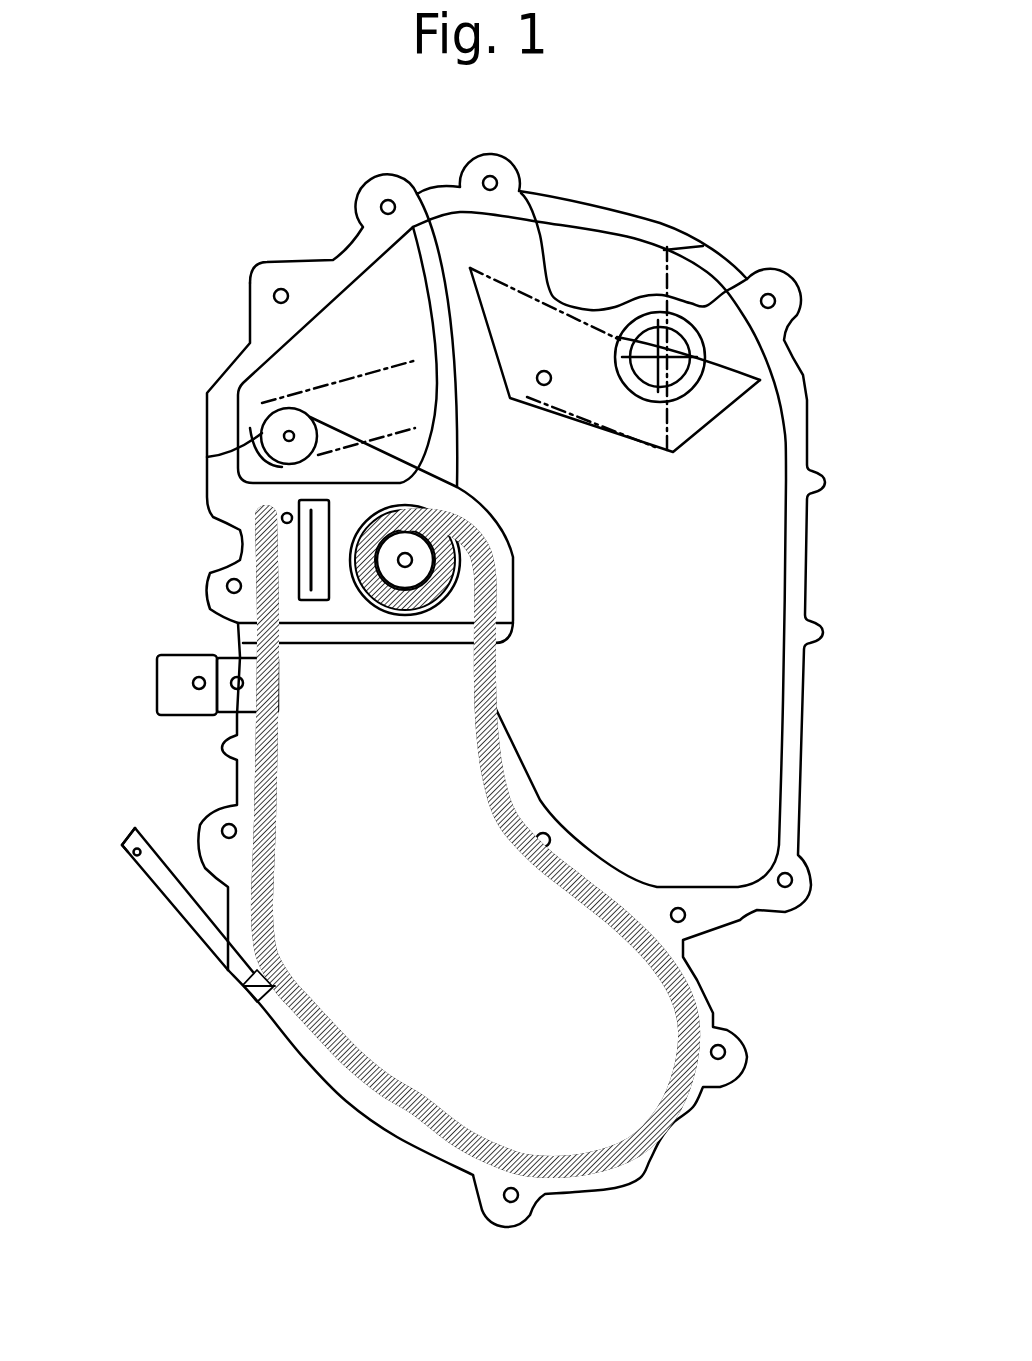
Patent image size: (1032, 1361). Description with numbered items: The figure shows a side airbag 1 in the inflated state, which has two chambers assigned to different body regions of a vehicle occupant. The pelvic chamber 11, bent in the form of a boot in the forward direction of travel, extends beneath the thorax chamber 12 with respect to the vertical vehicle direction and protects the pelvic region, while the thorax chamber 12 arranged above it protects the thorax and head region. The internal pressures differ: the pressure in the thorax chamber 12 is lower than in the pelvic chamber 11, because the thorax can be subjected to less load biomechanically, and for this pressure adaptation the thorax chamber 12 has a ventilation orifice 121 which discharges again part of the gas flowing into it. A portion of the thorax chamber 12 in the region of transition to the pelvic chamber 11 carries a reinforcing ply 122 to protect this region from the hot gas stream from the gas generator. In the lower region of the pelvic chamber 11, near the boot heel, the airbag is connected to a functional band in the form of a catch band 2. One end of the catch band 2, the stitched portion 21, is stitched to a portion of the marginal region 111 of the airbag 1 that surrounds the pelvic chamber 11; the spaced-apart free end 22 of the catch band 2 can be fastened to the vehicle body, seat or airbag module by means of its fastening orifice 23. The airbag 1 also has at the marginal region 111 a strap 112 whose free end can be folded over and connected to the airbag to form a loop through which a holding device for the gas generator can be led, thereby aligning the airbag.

The side airbag 1 is at (755, 244).
The pelvic chamber 11 is at (605, 1097).
The marginal region 111 is at (410, 1127).
The strap 112 is at (160, 661).
The thorax chamber 12 is at (747, 578).
The ventilation orifice 121 is at (760, 380).
The reinforcing ply 122 is at (377, 297).
The catch band 2 is at (136, 837).
The stitched end portion 21 is at (247, 995).
The free end 22 is at (119, 844).
The fastening orifice 23 is at (133, 853).